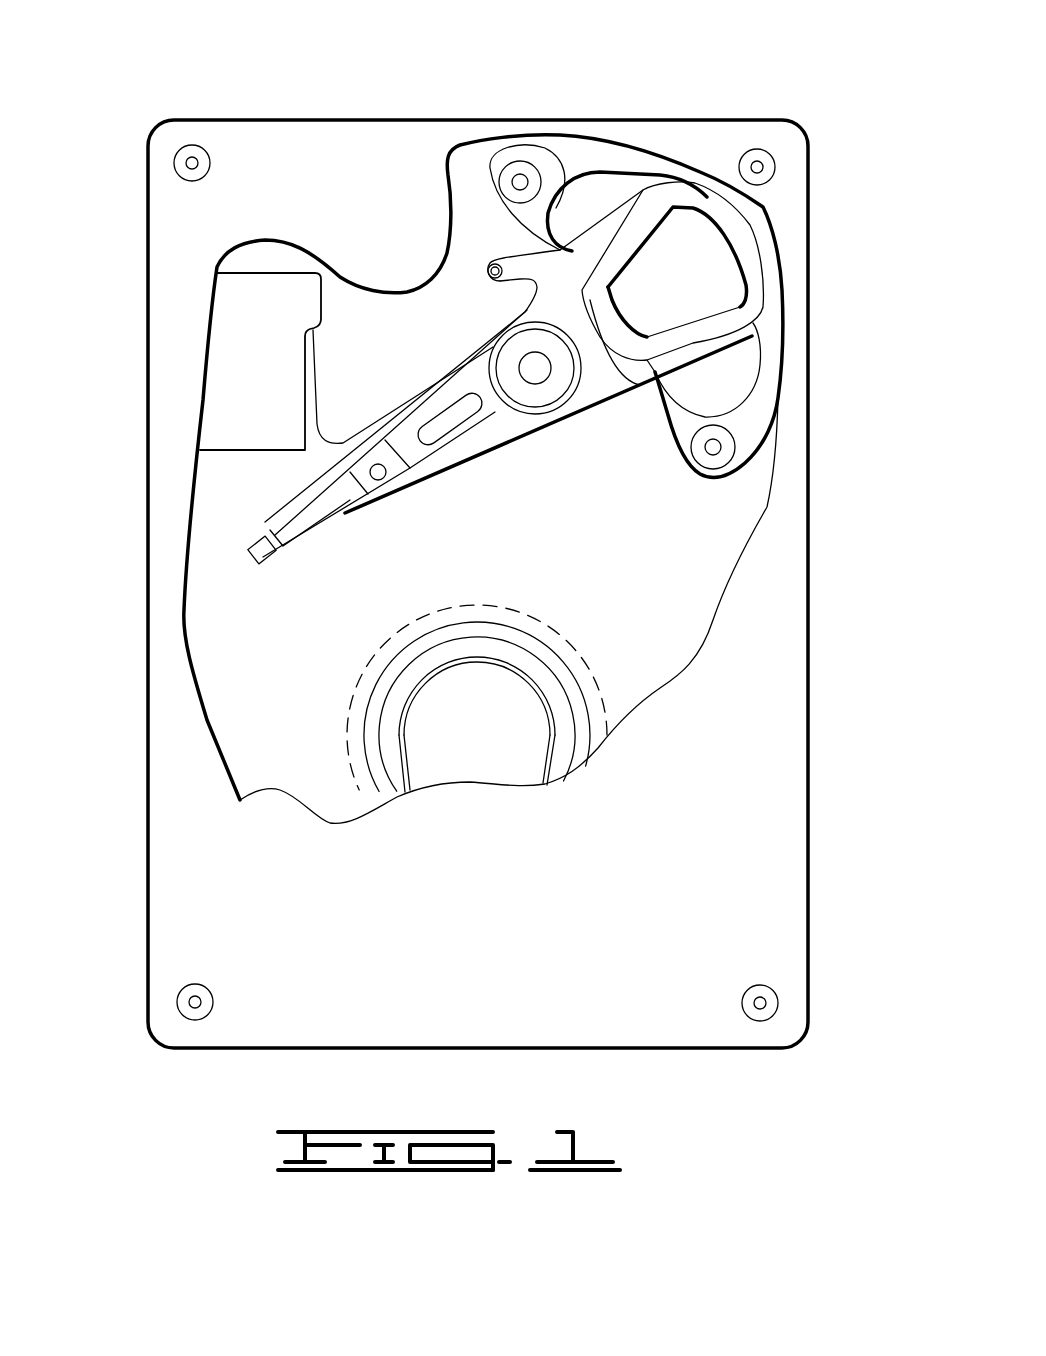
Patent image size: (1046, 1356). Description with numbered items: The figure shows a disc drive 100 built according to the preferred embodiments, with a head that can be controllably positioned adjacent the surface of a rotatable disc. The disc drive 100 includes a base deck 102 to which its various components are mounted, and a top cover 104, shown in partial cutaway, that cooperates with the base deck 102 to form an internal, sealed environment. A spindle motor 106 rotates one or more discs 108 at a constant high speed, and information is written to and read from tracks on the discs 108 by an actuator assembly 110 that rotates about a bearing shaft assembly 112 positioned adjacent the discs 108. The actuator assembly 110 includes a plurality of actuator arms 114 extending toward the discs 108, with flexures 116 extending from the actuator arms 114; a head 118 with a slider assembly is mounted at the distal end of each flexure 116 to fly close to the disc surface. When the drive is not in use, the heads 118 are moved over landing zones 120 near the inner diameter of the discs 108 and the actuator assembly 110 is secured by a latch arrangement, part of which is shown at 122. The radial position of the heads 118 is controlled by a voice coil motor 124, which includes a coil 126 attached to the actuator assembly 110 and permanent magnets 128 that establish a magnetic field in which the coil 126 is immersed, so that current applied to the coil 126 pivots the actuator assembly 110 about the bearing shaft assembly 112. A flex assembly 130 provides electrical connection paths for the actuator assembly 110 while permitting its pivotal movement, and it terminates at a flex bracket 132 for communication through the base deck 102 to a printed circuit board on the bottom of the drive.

The disc drive 100 is at (213, 96).
The base deck 102 is at (216, 504).
The top cover 104 is at (207, 826).
The spindle motor 106 is at (489, 752).
The disc 108 is at (667, 623).
The actuator assembly 110 is at (540, 373).
The bearing shaft assembly 112 is at (512, 418).
The actuator arm 114 is at (410, 458).
The flexure 116 is at (323, 515).
The head 118 is at (258, 562).
The landing zone 120 is at (350, 690).
The latch arrangement 122 is at (490, 268).
The voice coil motor 124 is at (593, 178).
The coil 126 is at (748, 264).
The permanent magnet 128 is at (570, 213).
The flex assembly 130 is at (443, 363).
The flex bracket 132 is at (237, 373).